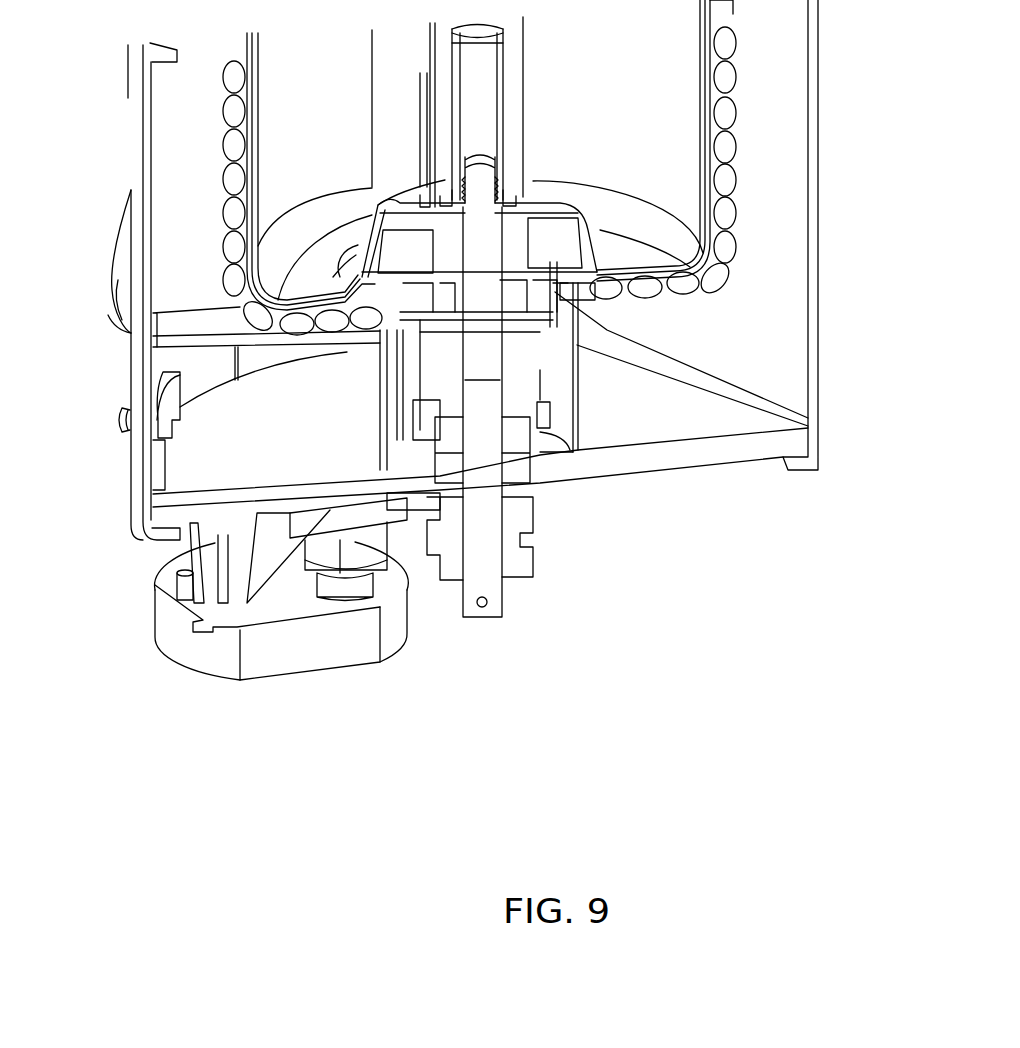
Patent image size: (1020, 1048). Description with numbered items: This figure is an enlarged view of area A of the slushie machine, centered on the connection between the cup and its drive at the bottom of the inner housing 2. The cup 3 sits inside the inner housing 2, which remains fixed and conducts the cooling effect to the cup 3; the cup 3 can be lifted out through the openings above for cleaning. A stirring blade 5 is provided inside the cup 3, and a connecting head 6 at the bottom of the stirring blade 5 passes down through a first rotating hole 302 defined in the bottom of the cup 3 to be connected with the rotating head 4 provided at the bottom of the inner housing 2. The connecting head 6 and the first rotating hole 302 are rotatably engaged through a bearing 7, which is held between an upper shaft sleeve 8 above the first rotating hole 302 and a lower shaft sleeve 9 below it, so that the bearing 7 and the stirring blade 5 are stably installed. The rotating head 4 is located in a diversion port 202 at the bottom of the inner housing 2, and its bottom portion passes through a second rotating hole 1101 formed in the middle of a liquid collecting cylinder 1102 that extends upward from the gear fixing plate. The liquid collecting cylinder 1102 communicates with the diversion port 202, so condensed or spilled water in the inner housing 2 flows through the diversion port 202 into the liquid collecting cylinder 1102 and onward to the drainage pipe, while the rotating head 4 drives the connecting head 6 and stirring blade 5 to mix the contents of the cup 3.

The inner housing 2 is at (733, 280).
The cup 3 is at (680, 157).
The stirring blade 5 is at (513, 90).
The connecting head 6 is at (483, 242).
The bearing 7 is at (600, 300).
The upper shaft sleeve 8 is at (712, 268).
The lower shaft sleeve 9 is at (808, 418).
The diversion port 202 is at (560, 295).
The first rotating hole 302 is at (425, 272).
The second rotating hole 1101 is at (547, 468).
The liquid collecting cylinder 1102 is at (555, 387).
The rotating head 4 is at (477, 527).
The area A is at (477, 387).